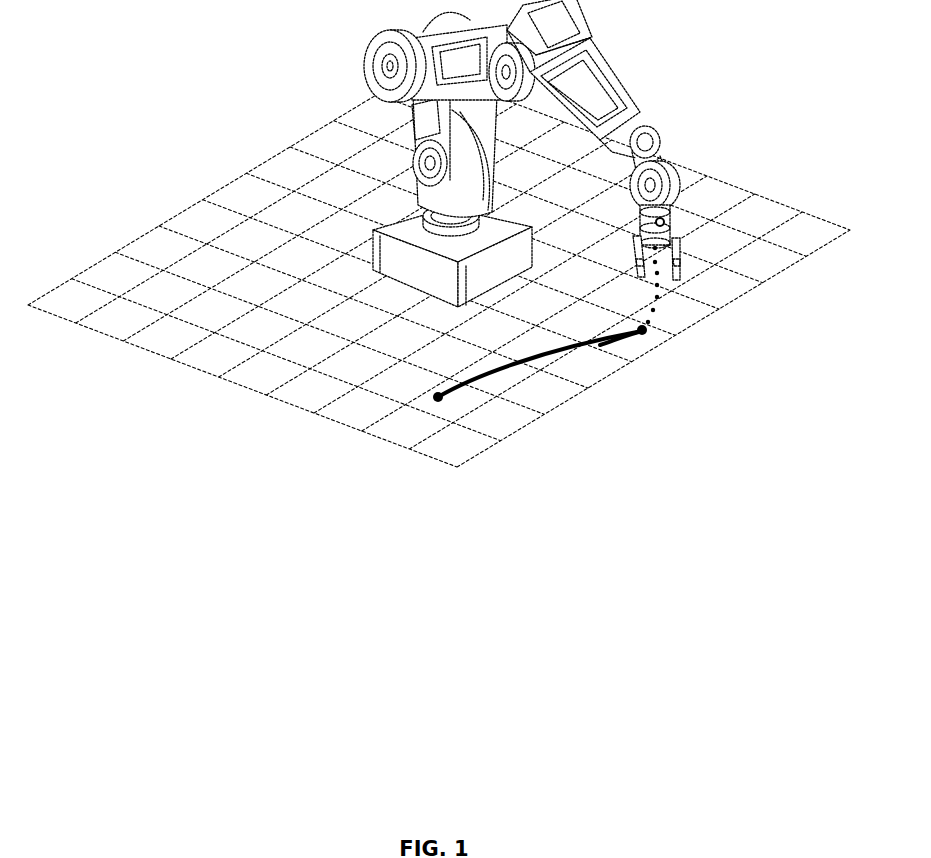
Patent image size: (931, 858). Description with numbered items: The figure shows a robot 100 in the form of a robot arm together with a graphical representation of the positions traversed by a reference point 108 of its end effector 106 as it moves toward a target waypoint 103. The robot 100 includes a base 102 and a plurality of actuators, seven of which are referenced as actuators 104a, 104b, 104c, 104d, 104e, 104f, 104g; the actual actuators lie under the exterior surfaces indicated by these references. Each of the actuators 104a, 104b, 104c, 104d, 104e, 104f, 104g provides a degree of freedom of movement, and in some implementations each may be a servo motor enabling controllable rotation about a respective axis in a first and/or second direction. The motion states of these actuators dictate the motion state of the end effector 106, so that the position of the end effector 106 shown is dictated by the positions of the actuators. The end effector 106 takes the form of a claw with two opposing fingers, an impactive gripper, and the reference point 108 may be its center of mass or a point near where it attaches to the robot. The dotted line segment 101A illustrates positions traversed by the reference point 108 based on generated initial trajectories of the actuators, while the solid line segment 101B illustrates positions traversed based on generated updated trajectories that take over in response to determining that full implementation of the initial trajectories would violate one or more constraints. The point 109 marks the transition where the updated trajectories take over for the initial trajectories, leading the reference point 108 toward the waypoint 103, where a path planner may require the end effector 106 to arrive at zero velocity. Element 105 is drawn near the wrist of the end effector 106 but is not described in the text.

The robot 100 is at (529, 166).
The dotted line segment 101A is at (668, 243).
The solid line segment 101B is at (522, 365).
The base 102 is at (417, 277).
The target waypoint 103 is at (438, 400).
The actuator 104a is at (672, 211).
The actuator 104b is at (648, 187).
The actuator 104c is at (648, 143).
The actuator 104d is at (502, 68).
The actuator 104e is at (393, 70).
The actuator 104f is at (437, 167).
The actuator 104g is at (437, 235).
The tool center point 105 is at (667, 222).
The end effector 106 is at (667, 242).
The reference point 108 is at (657, 297).
The transition point 109 is at (642, 340).